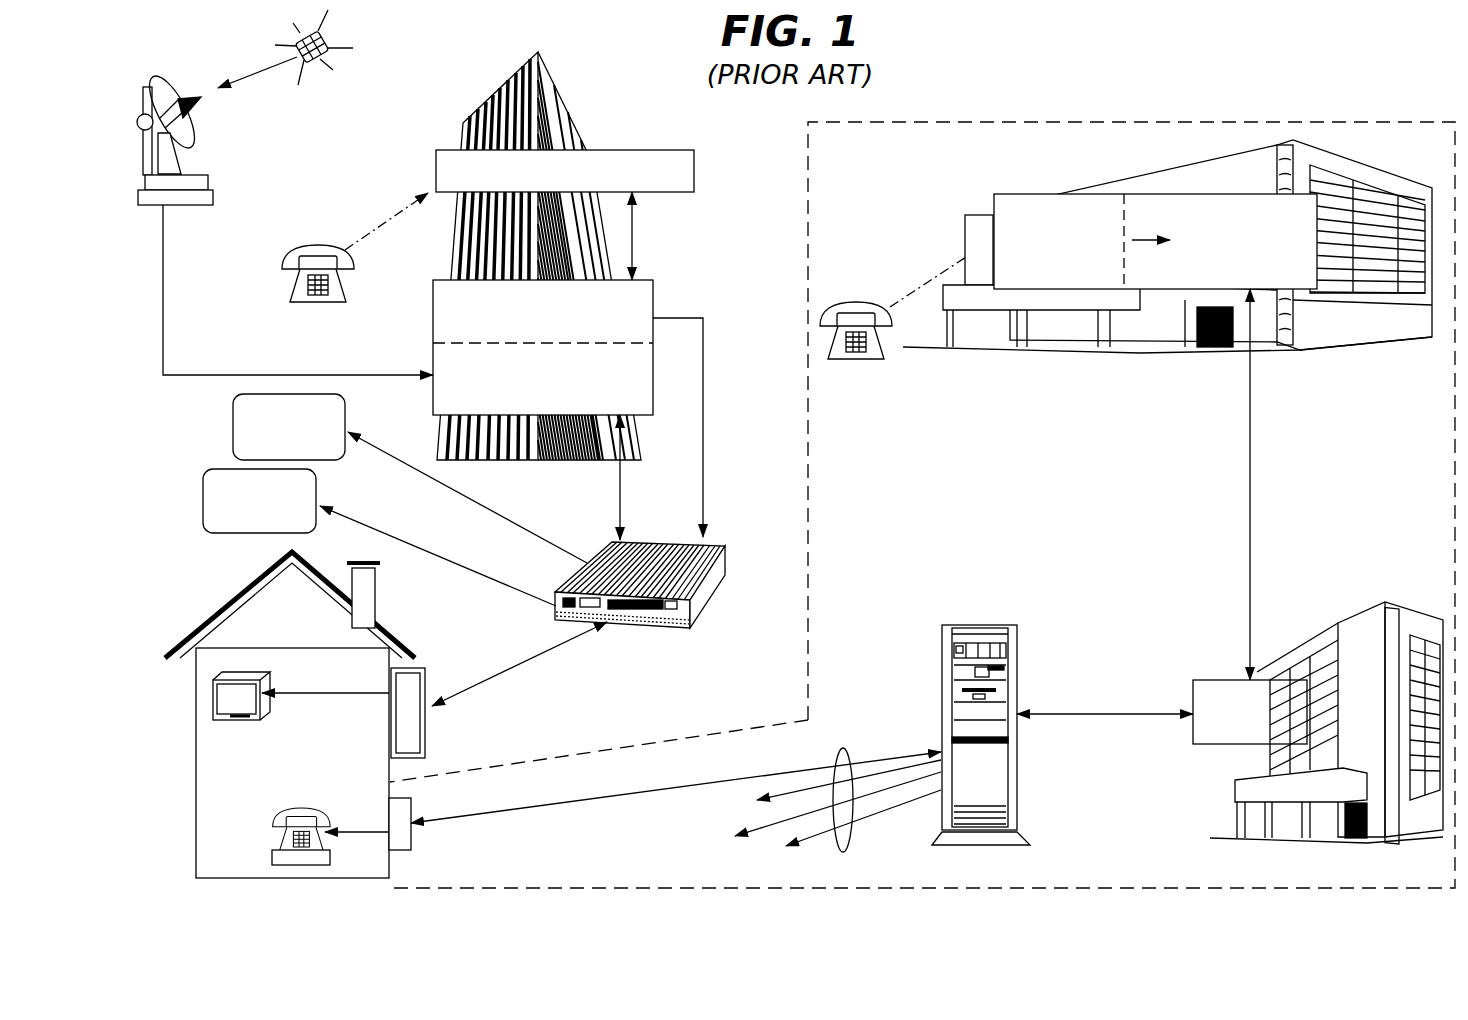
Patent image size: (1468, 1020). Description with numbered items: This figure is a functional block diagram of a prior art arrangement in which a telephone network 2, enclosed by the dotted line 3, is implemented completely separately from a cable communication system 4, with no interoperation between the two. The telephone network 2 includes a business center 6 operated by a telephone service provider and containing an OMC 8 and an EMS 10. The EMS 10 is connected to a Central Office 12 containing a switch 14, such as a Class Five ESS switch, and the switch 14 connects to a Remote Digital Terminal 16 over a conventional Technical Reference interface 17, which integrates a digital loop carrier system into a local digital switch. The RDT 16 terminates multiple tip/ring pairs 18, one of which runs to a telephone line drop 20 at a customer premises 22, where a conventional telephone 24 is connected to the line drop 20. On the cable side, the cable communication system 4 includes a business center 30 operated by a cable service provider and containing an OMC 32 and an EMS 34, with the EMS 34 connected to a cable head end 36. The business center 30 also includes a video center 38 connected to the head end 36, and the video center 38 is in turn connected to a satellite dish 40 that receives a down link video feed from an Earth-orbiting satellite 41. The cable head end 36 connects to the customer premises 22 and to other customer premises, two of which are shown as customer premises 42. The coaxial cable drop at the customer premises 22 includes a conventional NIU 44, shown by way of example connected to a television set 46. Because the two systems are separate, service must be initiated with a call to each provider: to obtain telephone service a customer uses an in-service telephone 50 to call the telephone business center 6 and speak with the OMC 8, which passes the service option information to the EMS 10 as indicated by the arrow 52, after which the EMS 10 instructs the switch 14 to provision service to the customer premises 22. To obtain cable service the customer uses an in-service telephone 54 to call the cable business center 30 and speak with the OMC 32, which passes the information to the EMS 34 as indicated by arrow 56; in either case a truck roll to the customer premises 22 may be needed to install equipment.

The telephone network 2 is at (926, 192).
The dotted line 3 is at (1322, 122).
The cable communication system 4 is at (388, 110).
The business center 6 is at (1405, 185).
The OMC 8 is at (997, 194).
The EMS 10 is at (1215, 193).
The Central Office 12 is at (1375, 610).
The switch 14 is at (1205, 680).
The Remote Digital Terminal (RDT) 16 is at (992, 625).
The TR-303 interface 17 is at (1097, 715).
The tip/ring pairs 18 is at (850, 840).
The telephone line drop 20 is at (411, 844).
The customer premises 22 is at (196, 764).
The telephone 24 is at (272, 838).
The business center 30 is at (512, 75).
The OMC 32 is at (668, 150).
The EMS 34 is at (433, 318).
The cable head end 36 is at (705, 597).
The video center 38 is at (650, 378).
The satellite dish 40 is at (210, 183).
The satellite 41 is at (313, 62).
The customer premises 42 is at (233, 428).
The NIU 44 is at (427, 688).
The television set 46 is at (262, 716).
The in-service telephone 50 is at (874, 362).
The arrow 52 is at (1133, 236).
The in-service telephone 54 is at (282, 283).
The arrow 56 is at (634, 248).